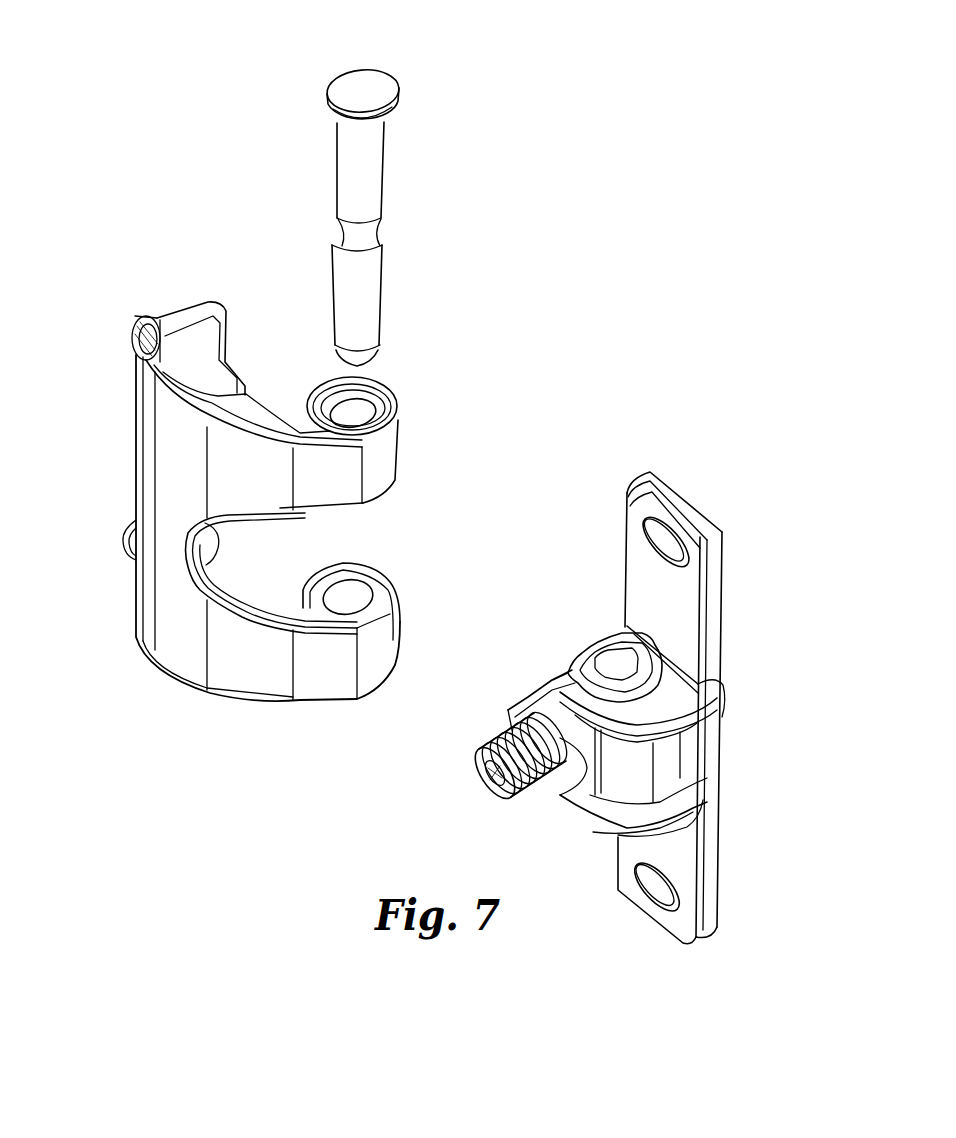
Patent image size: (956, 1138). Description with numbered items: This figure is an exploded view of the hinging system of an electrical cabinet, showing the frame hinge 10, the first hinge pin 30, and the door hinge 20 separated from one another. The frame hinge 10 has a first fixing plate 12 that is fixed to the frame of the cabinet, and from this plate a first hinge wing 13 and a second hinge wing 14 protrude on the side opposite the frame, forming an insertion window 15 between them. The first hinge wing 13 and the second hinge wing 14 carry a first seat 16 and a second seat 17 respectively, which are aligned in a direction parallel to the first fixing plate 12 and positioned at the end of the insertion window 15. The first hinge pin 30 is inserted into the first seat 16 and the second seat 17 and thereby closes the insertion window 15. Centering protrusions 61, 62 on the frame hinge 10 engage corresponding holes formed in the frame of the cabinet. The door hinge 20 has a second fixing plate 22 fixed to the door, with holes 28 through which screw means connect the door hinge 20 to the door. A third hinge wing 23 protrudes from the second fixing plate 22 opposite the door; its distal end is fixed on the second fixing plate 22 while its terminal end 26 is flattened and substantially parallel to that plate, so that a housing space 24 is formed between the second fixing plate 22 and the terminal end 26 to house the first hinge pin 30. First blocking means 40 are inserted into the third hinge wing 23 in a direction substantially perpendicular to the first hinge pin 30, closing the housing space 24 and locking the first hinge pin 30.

The frame hinge 10 is at (256, 431).
The first fixing plate 12 is at (200, 341).
The first hinge wing 13 is at (385, 455).
The second hinge wing 14 is at (385, 655).
The insertion window 15 is at (356, 540).
The first seat 16 is at (360, 410).
The second seat 17 is at (357, 592).
The door hinge 20 is at (613, 717).
The second fixing plate 22 is at (680, 607).
The third hinge wing 23 is at (553, 800).
The housing space 24 is at (617, 678).
The terminal end 26 is at (538, 712).
The holes 28 is at (650, 540).
The first hinge pin 30 is at (443, 121).
The first blocking means 40 is at (480, 783).
The centering protrusion 61 is at (148, 333).
The centering protrusion 62 is at (128, 546).